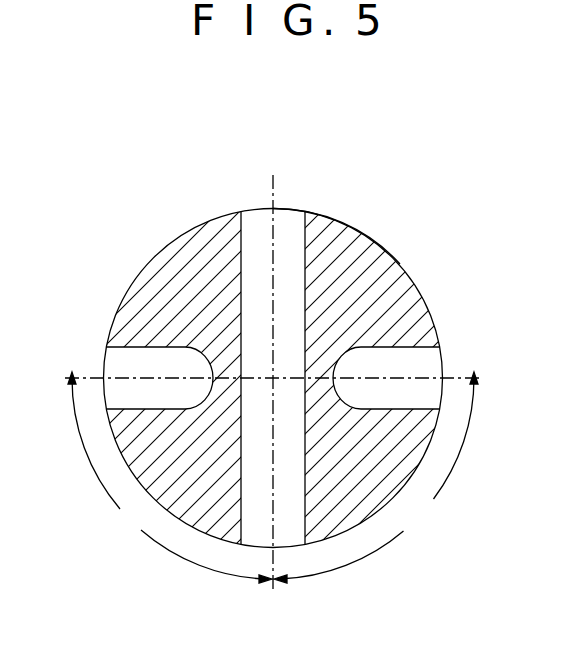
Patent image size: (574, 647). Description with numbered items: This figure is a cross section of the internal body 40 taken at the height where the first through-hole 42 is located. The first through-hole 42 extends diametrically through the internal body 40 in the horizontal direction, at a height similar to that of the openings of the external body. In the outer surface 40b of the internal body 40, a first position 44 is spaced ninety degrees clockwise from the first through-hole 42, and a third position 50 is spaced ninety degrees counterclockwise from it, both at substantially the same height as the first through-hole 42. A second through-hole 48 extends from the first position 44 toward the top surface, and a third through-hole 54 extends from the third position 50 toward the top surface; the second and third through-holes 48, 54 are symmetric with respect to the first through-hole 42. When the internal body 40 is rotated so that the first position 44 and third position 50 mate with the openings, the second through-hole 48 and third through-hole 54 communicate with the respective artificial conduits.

The internal body 40 is at (392, 233).
The outer surface 40b is at (333, 217).
The first through-hole 42 is at (252, 243).
The first position 44 is at (93, 371).
The second through-hole 48 is at (148, 358).
The third position 50 is at (450, 366).
The third through-hole 54 is at (397, 356).